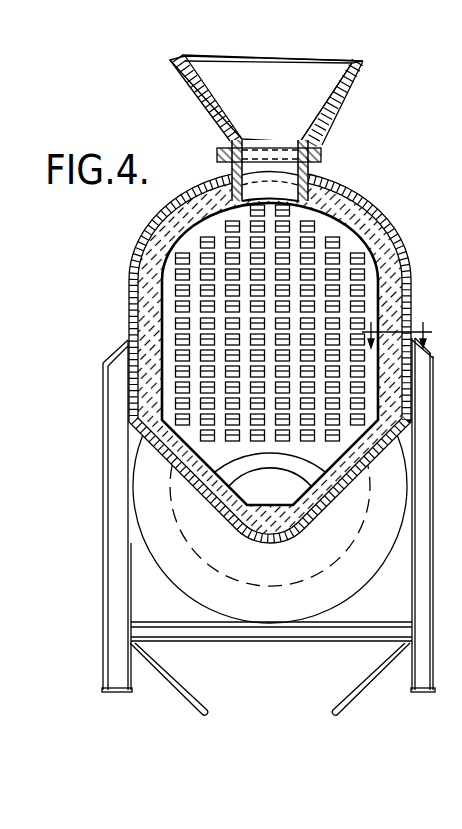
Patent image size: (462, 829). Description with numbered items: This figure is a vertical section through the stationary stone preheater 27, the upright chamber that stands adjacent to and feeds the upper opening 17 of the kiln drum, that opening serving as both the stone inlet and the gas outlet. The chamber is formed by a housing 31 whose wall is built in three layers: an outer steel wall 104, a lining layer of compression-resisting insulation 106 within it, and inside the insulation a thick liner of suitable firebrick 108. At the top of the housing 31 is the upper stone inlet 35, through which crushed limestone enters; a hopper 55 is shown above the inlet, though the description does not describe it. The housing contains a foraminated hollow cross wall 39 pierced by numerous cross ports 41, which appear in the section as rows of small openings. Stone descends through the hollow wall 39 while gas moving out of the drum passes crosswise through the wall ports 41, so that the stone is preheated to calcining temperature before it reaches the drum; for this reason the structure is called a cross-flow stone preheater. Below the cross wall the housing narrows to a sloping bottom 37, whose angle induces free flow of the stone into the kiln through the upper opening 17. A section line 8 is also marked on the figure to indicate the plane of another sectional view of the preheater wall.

The section line 8- 8 is at (397, 325).
The upper opening 17 is at (269, 493).
The stationary stone preheater 27 is at (263, 350).
The housing 31 is at (167, 260).
The upper stone inlet 35 is at (271, 172).
The sloping bottom 37 is at (337, 461).
The foraminated hollow cross wall 39 is at (274, 323).
The cross ports 41 is at (177, 323).
The hopper 55 is at (199, 108).
The outer steel wall 104 is at (137, 270).
The lining layer of compression-resisting insulation 106 is at (142, 288).
The thick liner of firebrick 108 is at (160, 258).